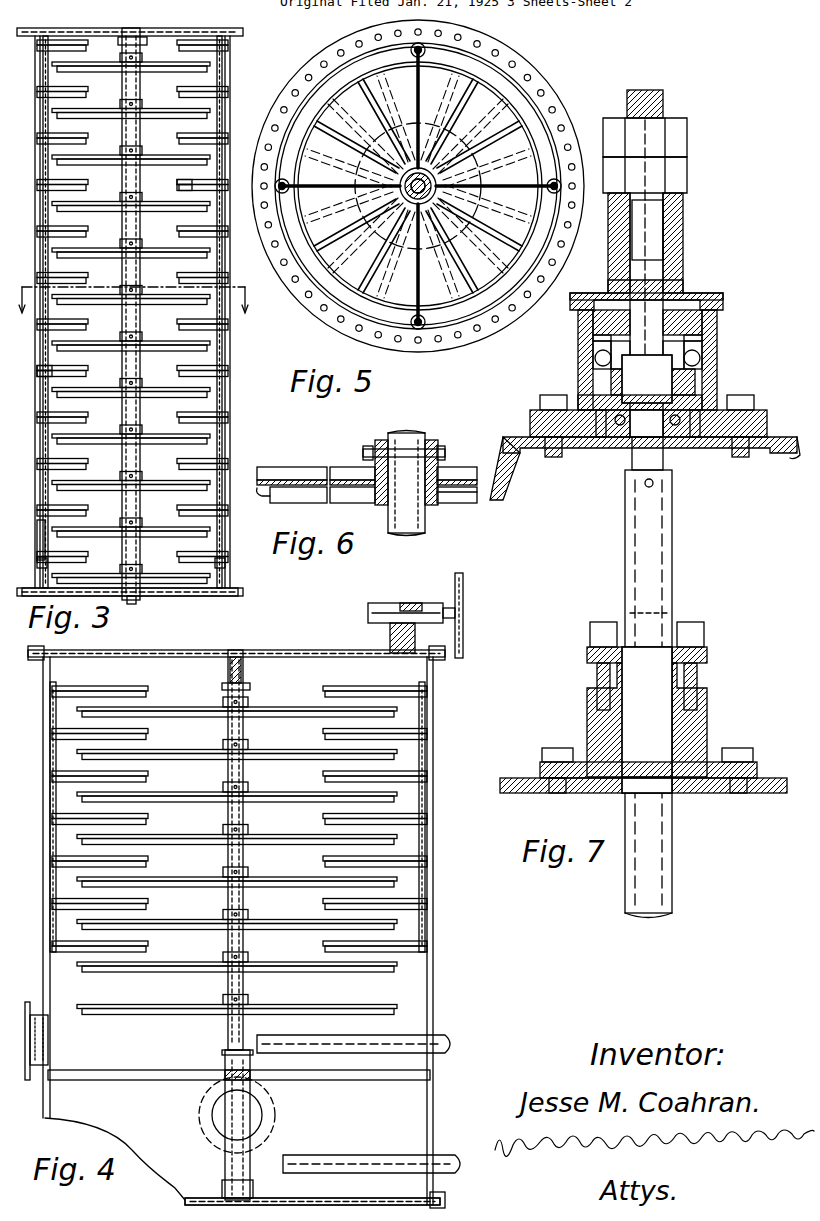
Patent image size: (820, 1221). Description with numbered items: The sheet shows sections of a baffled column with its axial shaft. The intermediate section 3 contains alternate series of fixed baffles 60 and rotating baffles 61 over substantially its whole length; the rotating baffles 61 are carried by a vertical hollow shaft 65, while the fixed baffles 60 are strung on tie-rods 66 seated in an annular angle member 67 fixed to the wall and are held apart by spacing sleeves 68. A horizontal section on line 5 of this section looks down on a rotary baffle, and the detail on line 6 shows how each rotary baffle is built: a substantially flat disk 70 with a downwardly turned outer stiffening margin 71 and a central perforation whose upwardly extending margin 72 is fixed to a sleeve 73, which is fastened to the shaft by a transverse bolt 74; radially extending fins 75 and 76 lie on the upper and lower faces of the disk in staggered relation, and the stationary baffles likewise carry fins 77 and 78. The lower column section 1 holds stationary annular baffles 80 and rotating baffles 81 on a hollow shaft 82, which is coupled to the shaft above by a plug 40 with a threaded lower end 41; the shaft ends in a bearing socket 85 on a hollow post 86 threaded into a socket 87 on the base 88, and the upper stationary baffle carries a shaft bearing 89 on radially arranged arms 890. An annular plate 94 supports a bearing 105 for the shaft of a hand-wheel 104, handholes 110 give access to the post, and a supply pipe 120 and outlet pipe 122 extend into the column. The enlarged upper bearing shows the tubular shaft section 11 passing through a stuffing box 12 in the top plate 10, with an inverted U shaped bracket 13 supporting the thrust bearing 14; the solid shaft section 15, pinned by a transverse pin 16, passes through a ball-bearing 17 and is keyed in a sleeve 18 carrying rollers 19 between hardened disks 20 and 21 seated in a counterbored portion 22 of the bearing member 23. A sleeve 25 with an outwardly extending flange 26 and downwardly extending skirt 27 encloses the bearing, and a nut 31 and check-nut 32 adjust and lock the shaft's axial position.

In FIG. 4, the lower column section 1 is at (435, 800).
In FIG. 3, the intermediate section 3 is at (35, 160).
In FIG. 3, the section line 5- 5 is at (133, 310).
In FIG. 5, the section line 6- 6 is at (296, 180).
In FIG. 7, the top plate 10 is at (775, 780).
In FIG. 7, the shaft section 11 is at (672, 612).
In FIG. 7, the stuffing box 12 is at (700, 730).
In FIG. 7, the inverted U shaped bracket 13 is at (505, 490).
In FIG. 7, the thrust bearing 14 is at (594, 365).
In FIG. 7, the solid shaft section 15 is at (668, 222).
In FIG. 5, the transverse pin 16 is at (437, 182).
In FIG. 7, the transverse pin 16 is at (653, 484).
In FIG. 7, the ball-bearing 17 is at (680, 418).
In FIG. 7, the sleeve 18 is at (700, 328).
In FIG. 7, the rollers 19 is at (704, 372).
In FIG. 7, the hardened disk 20 is at (594, 392).
In FIG. 7, the hardened disk 21 is at (596, 342).
In FIG. 7, the counterbored portion 22 is at (702, 385).
In FIG. 7, the bearing member 23 is at (718, 325).
In FIG. 7, the sleeve 25 is at (684, 252).
In FIG. 7, the outwardly extending flange 26 is at (684, 292).
In FIG. 7, the downwardly extending skirt 27 is at (724, 296).
In FIG. 7, the nut 31 is at (685, 178).
In FIG. 7, the check-nut 32 is at (685, 133).
In FIG. 3, the plug 40 is at (186, 596).
In FIG. 3, the threaded lower end 41 is at (138, 602).
In FIG. 3, the fixed baffles 60 is at (80, 281).
In FIG. 3, the rotating baffles 61 is at (158, 112).
In FIG. 3, the vertical hollow shaft 65 is at (128, 86).
In FIG. 6, the vertical hollow shaft 65 is at (426, 518).
In FIG. 3, the tie-rods 66 is at (38, 524).
In FIG. 3, the annular angle member 67 is at (38, 563).
In FIG. 3, the spacing sleeves 68 is at (44, 70).
In FIG. 6, the disk 70 is at (302, 481).
In FIG. 6, the outer stiffening margin 71 is at (262, 492).
In FIG. 6, the upwardly extending margin 72 is at (365, 470).
In FIG. 6, the sleeve 73 is at (382, 440).
In FIG. 6, the transverse bolt 74 is at (408, 449).
In FIG. 6, the radially extending fins 75 is at (279, 470).
In FIG. 6, the radially extending fins 76 is at (365, 500).
In FIG. 3, the radially extending fins 77 is at (182, 182).
In FIG. 3, the radially extending fins 78 is at (180, 189).
In FIG. 4, the stationary annular baffles 80 is at (135, 735).
In FIG. 4, the rotating baffles 81 is at (300, 716).
In FIG. 4, the hollow shaft 82 is at (245, 782).
In FIG. 4, the bearing socket 85 is at (225, 1055).
In FIG. 4, the hollow post 86 is at (242, 1146).
In FIG. 4, the socket 87 is at (254, 1192).
In FIG. 4, the base 88 is at (330, 1200).
In FIG. 4, the shaft bearing 89 is at (224, 686).
In FIG. 4, the radially arranged arms 890 is at (304, 680).
In FIG. 4, the annular plate 94 is at (372, 650).
In FIG. 4, the hand-wheel 104 is at (464, 616).
In FIG. 4, the bearing 105 is at (428, 603).
In FIG. 4, the handholes 110 is at (40, 1072).
In FIG. 4, the supply pipe 120 is at (440, 1035).
In FIG. 4, the outlet pipe 122 is at (447, 1155).